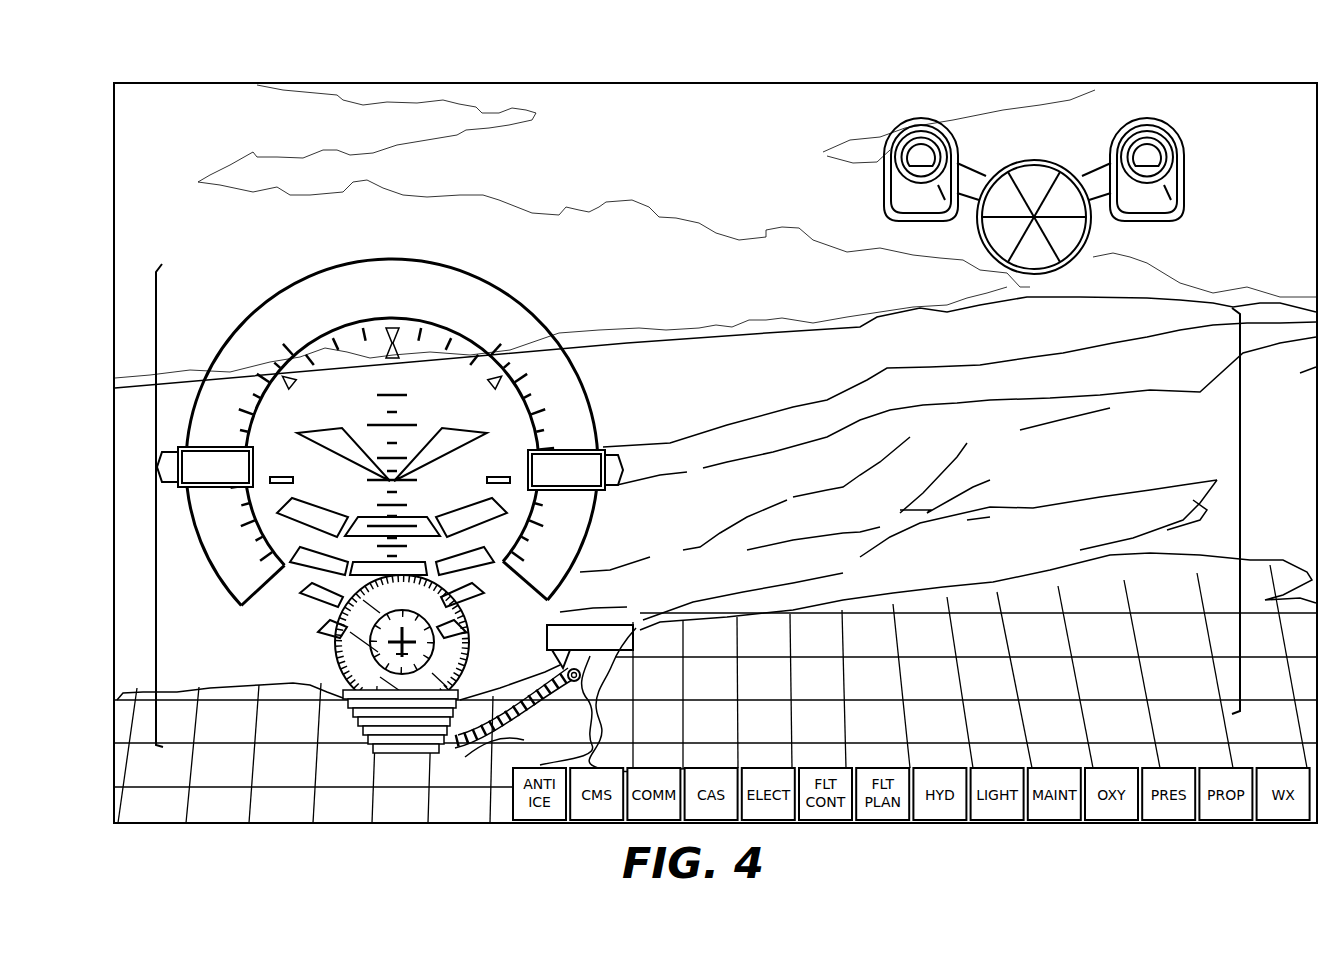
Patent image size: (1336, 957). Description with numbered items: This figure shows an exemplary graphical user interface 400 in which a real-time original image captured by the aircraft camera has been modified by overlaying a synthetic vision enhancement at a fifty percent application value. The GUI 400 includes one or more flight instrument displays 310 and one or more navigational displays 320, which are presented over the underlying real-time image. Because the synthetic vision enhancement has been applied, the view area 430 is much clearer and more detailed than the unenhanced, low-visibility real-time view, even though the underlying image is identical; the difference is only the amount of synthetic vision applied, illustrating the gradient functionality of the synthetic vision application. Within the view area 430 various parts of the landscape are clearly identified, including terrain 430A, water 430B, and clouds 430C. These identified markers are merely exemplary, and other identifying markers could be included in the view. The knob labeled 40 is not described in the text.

The graphical user interface 400 is at (1163, 62).
The flight instrument display 310 is at (1028, 154).
The control knob 40 is at (1034, 169).
The navigational display 320 is at (148, 526).
The view area 430 is at (1240, 547).
The terrain 430A is at (1005, 432).
The water 430B is at (968, 700).
The clouds 430C is at (605, 200).